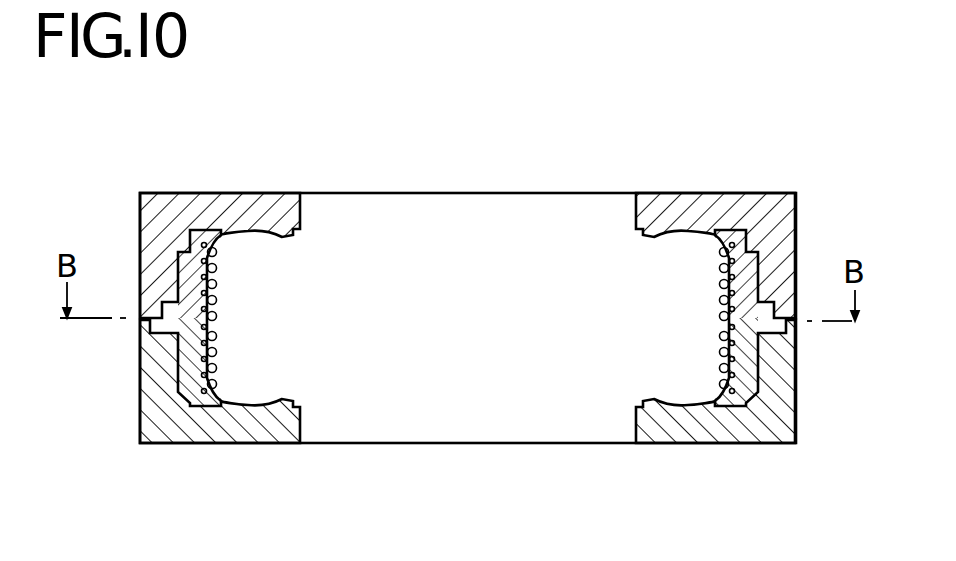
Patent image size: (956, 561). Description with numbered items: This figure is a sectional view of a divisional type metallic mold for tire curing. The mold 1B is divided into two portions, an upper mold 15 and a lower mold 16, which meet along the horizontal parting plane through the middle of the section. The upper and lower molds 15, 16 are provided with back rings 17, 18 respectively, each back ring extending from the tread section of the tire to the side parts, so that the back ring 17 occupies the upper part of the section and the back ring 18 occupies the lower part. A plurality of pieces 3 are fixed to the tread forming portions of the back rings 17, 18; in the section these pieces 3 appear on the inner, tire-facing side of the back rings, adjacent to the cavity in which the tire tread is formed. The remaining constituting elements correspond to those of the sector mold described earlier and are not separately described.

The mold 1B is at (580, 191).
The pieces 3 is at (212, 268).
The upper mold 15 is at (797, 240).
The lower mold 16 is at (797, 402).
The back ring 17 is at (242, 193).
The back ring 18 is at (192, 438).